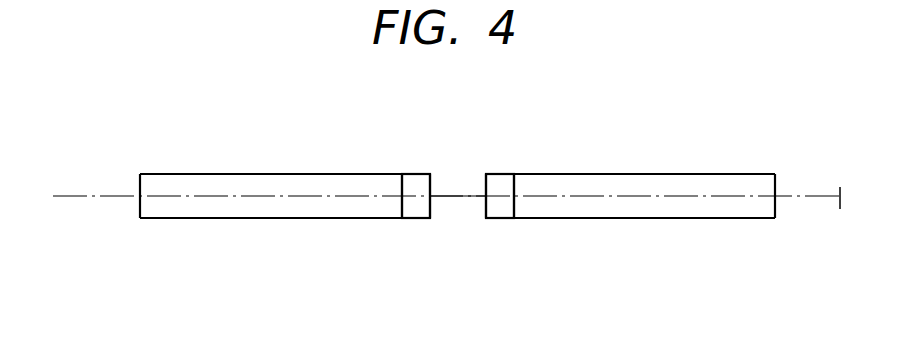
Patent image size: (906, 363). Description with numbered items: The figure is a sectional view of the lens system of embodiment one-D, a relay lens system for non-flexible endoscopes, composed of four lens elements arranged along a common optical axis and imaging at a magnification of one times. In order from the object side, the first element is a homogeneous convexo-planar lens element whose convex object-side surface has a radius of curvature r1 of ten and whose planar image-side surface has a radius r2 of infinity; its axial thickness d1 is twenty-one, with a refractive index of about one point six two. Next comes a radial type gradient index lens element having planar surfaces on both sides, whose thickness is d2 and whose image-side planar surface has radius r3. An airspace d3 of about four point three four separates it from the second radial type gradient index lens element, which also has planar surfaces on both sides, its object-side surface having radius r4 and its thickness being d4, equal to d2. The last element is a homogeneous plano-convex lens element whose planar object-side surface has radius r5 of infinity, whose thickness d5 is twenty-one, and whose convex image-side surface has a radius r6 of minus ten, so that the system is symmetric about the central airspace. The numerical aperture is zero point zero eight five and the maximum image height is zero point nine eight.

The first lens surface radius of curvature r1 is at (139, 181).
The second lens surface radius of curvature r2 is at (403, 190).
The third lens surface radius of curvature r3 is at (433, 185).
The fourth lens surface radius of curvature r4 is at (485, 180).
The fifth lens surface radius of curvature r5 is at (515, 180).
The sixth lens surface radius of curvature r6 is at (776, 182).
The first lens element thickness d1 is at (252, 198).
The first gradient index lens element thickness d2 is at (418, 197).
The airspace between gradient index lens elements d3 is at (457, 197).
The second gradient index lens element thickness d4 is at (502, 197).
The last lens element thickness d5 is at (637, 197).